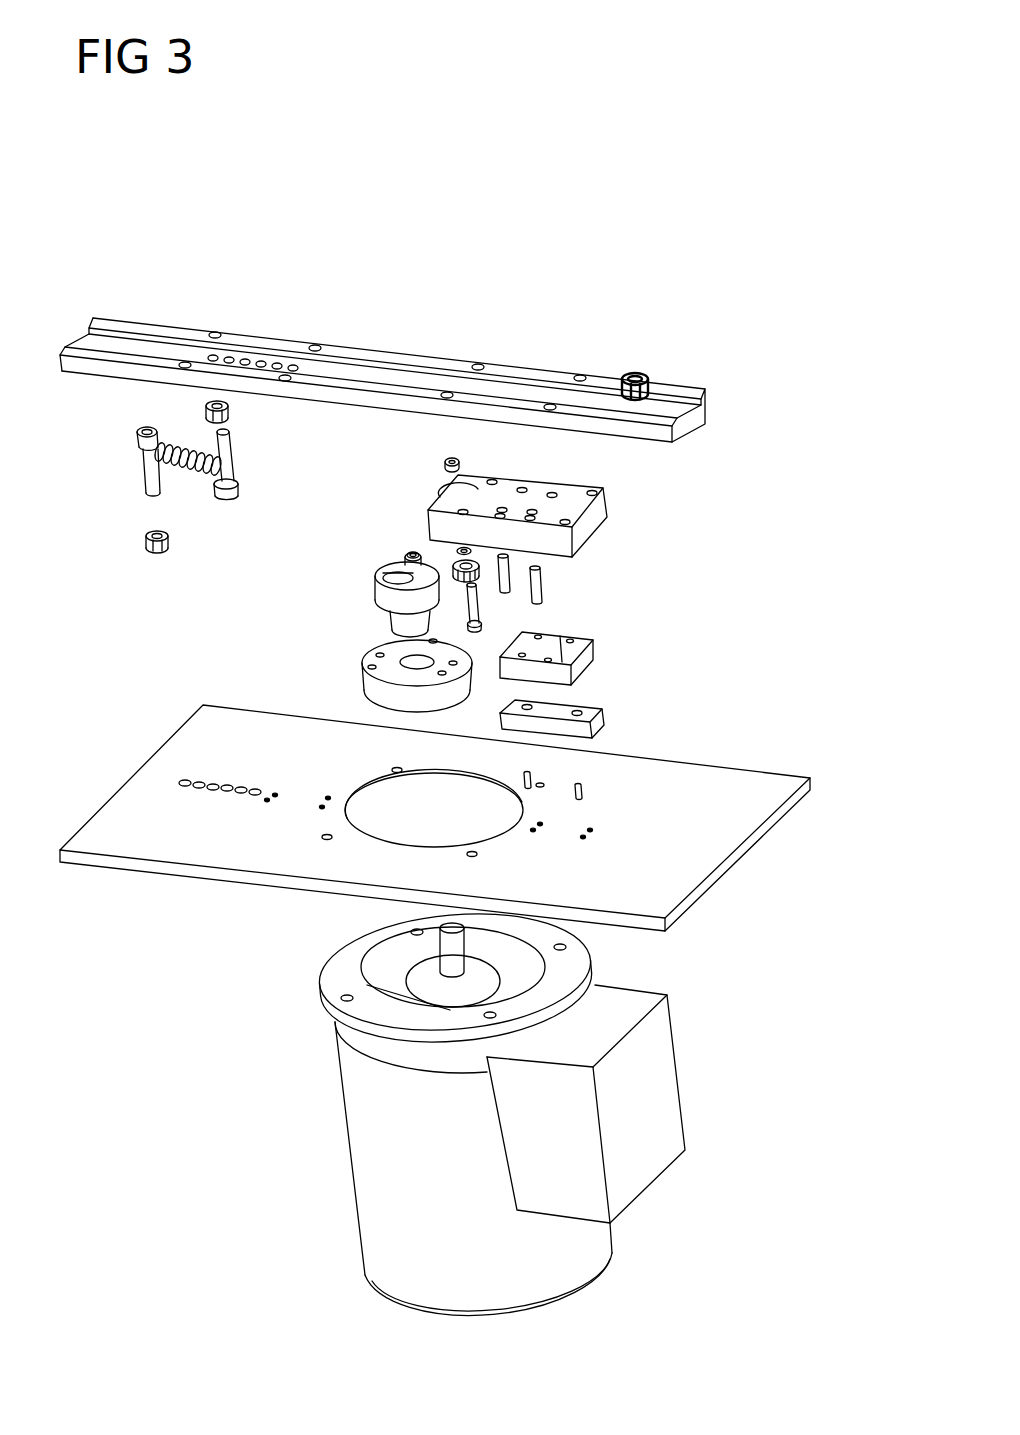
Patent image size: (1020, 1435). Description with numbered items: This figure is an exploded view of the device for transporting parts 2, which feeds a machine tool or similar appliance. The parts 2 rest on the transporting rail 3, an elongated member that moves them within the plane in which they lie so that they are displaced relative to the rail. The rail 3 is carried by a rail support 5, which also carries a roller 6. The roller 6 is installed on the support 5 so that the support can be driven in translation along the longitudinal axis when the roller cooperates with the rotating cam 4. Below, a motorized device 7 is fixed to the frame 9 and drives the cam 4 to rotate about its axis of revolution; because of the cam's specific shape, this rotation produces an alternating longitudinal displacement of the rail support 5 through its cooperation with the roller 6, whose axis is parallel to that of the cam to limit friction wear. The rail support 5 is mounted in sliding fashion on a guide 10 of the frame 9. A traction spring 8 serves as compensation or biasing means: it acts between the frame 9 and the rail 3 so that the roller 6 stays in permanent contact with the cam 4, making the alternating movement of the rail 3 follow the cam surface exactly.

The parts 2 is at (643, 372).
The transporting rail 3 is at (383, 350).
The rotating cam 4 is at (362, 657).
The rail support 5 is at (600, 644).
The roller 6 is at (480, 579).
The motorized device 7 is at (325, 1083).
The traction spring 8 is at (190, 480).
The frame 9 is at (143, 810).
The guide 10 is at (603, 722).